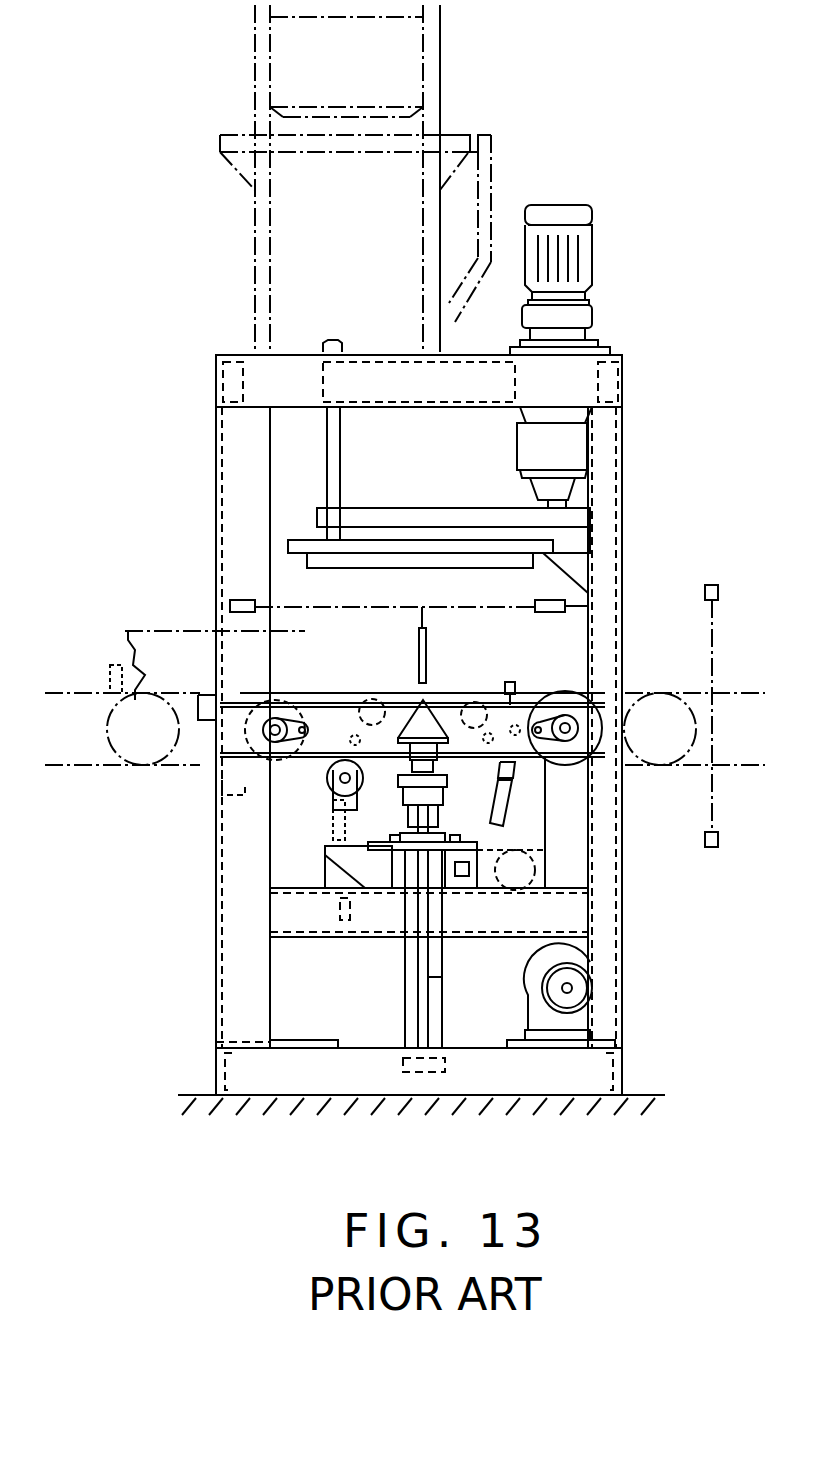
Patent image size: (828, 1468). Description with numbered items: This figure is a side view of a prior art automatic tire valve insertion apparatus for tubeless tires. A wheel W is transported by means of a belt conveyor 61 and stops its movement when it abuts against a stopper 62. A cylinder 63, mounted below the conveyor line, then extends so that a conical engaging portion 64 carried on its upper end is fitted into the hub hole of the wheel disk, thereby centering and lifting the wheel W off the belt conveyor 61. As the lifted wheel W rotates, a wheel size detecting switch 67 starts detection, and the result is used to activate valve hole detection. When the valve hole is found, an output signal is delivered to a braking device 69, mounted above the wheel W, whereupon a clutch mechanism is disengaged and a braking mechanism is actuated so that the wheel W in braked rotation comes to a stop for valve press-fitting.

The belt conveyor 61 is at (470, 688).
The stopper 62 is at (516, 684).
The cylinder 63 is at (442, 977).
The conical engaging portion 64 is at (406, 697).
The wheel size detecting switch 67 is at (336, 612).
The braking device 69 is at (525, 445).
The wheel W is at (128, 630).